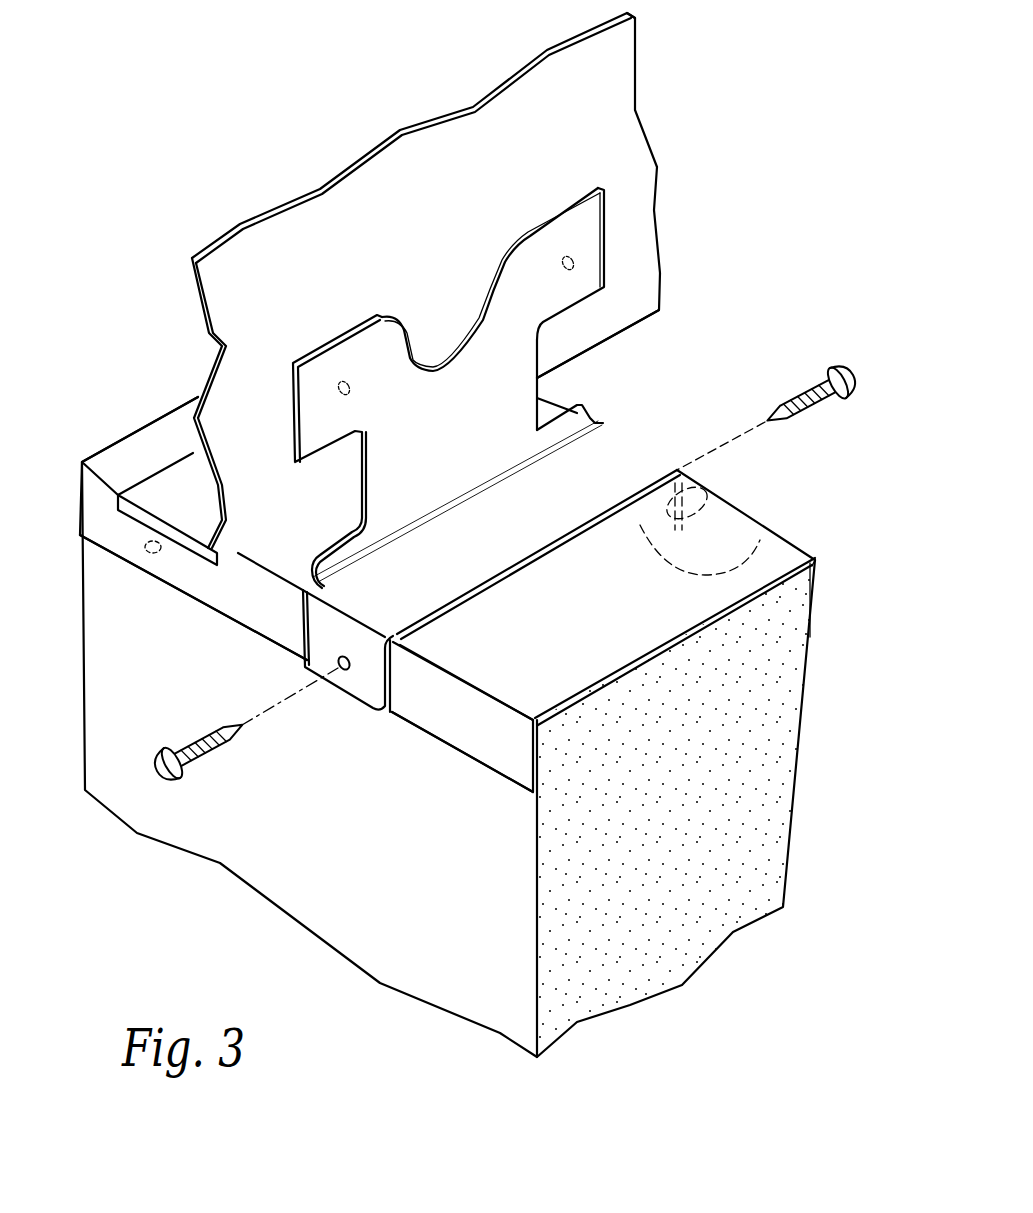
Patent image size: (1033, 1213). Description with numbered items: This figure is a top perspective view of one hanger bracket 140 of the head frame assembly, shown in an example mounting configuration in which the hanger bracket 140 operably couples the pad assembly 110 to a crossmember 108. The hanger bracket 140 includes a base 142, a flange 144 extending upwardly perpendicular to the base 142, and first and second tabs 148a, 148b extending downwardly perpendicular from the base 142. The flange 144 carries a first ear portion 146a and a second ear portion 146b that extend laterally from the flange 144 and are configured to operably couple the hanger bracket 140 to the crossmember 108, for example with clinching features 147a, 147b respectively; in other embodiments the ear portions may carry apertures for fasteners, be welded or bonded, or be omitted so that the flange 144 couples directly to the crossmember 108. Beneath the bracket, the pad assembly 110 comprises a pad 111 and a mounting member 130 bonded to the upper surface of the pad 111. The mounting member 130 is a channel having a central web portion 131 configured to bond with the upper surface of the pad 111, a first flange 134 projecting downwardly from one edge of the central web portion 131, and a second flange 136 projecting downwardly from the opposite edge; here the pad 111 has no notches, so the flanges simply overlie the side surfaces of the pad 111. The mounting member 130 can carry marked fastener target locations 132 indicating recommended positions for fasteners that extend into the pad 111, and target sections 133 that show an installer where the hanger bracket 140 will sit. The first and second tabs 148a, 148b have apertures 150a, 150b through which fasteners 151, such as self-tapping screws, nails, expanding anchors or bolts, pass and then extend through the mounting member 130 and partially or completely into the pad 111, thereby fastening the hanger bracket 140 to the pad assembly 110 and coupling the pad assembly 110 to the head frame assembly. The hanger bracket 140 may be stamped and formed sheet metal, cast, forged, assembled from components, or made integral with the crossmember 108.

The crossmember 108 is at (592, 327).
The pad assembly 110 is at (806, 673).
The pad 111 is at (738, 820).
The mounting member 130 is at (467, 735).
The central web portion 131 is at (717, 603).
The fastener target location 132 is at (146, 550).
The target section 133 is at (322, 628).
The first flange 134 is at (503, 750).
The second flange 136 is at (817, 597).
The hanger bracket 140 is at (393, 373).
The base 142 is at (490, 547).
The flange 144 is at (400, 477).
The first ear portion 146a is at (323, 415).
The second ear portion 146b is at (595, 232).
The clinching feature 147a is at (340, 385).
The clinching feature 147b is at (577, 258).
The first tab 148a is at (322, 652).
The second tab 148b is at (720, 574).
The aperture 150a is at (342, 672).
The aperture 150b is at (718, 515).
The fastener 151 is at (840, 383).